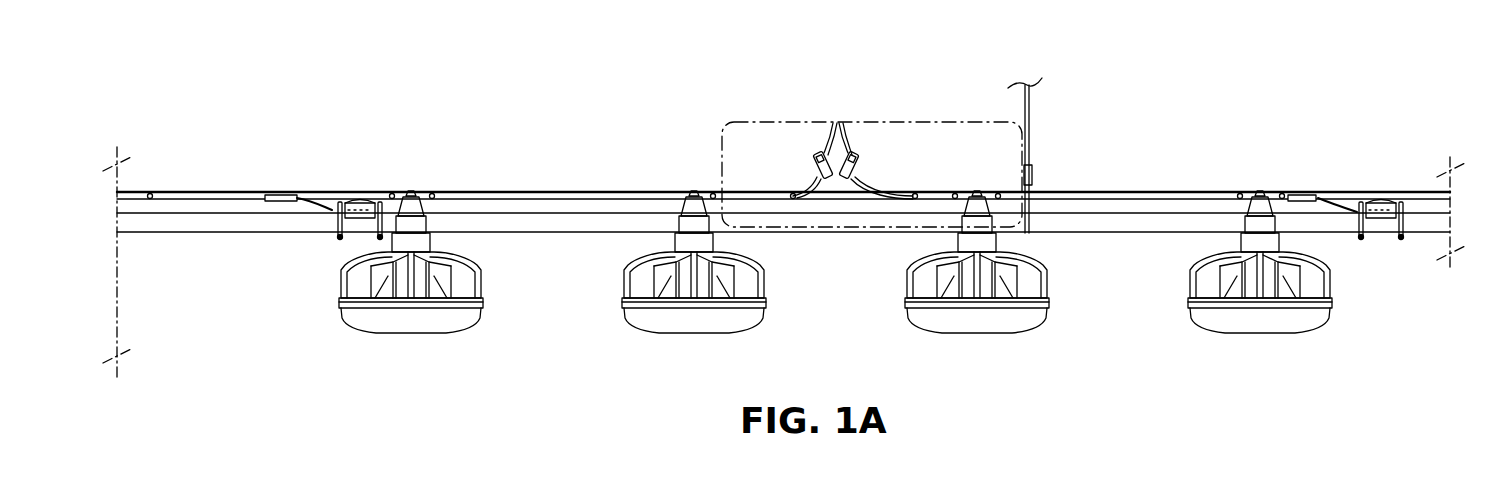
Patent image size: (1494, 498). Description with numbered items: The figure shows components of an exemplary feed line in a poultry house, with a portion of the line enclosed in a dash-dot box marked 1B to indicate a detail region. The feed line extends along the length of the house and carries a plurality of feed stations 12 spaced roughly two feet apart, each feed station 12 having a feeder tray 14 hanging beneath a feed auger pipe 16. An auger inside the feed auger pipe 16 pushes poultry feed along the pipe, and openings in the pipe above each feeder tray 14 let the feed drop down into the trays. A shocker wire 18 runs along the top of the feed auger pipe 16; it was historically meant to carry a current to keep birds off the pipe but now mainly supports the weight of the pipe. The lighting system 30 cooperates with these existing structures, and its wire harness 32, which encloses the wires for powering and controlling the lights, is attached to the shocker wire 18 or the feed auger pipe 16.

The detail region shown in FIG. 1B is at (752, 120).
The feed station 12 is at (1256, 184).
The feeder tray 14 is at (1013, 320).
The feed auger pipe 16 is at (1180, 222).
The shocker wire 18 is at (852, 190).
The lighting system 30 is at (297, 195).
The wire harness 32 is at (363, 200).